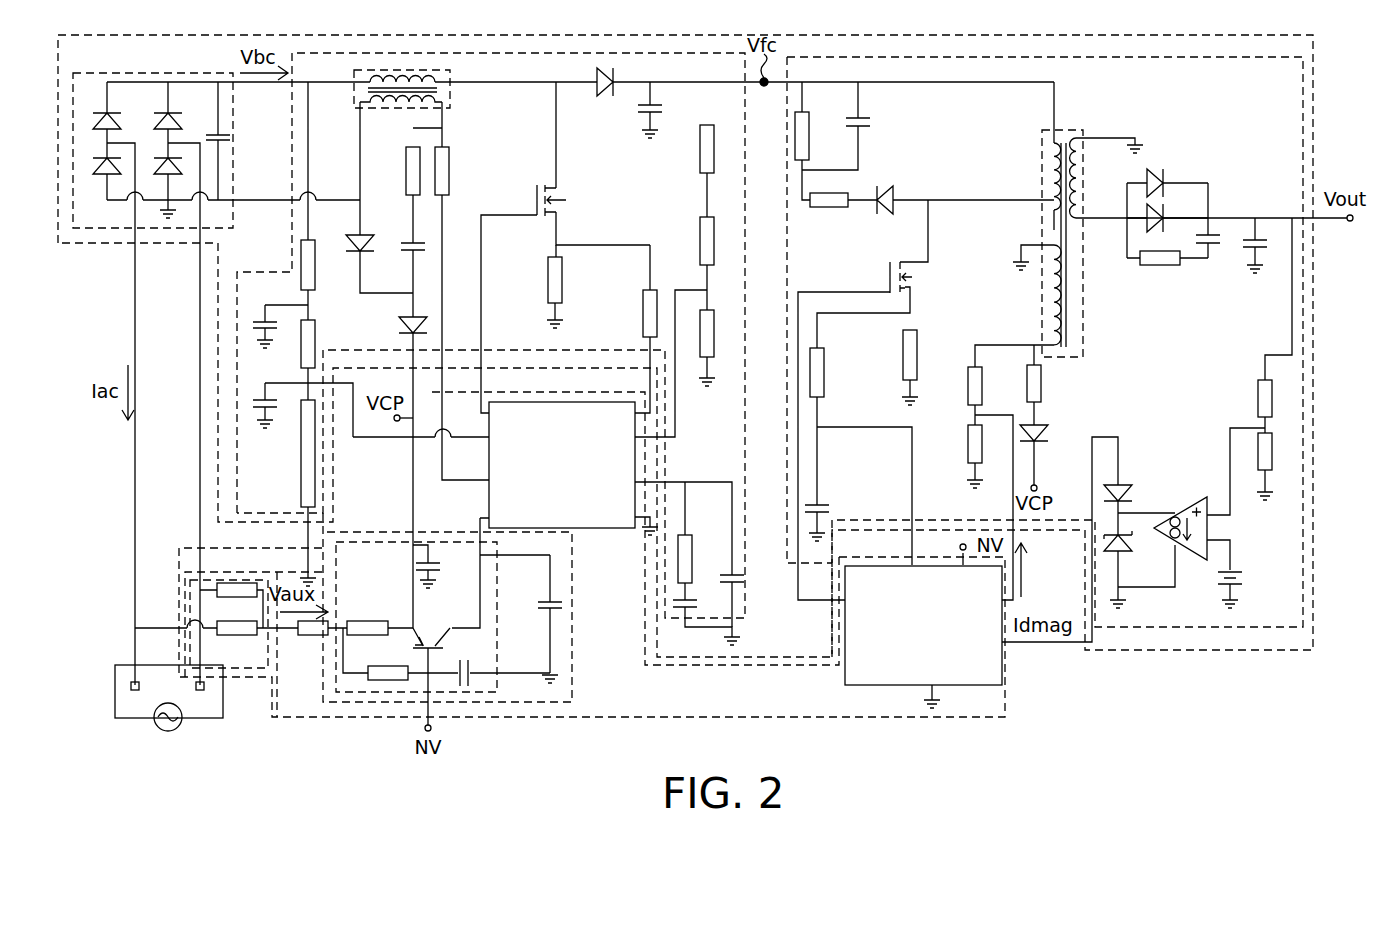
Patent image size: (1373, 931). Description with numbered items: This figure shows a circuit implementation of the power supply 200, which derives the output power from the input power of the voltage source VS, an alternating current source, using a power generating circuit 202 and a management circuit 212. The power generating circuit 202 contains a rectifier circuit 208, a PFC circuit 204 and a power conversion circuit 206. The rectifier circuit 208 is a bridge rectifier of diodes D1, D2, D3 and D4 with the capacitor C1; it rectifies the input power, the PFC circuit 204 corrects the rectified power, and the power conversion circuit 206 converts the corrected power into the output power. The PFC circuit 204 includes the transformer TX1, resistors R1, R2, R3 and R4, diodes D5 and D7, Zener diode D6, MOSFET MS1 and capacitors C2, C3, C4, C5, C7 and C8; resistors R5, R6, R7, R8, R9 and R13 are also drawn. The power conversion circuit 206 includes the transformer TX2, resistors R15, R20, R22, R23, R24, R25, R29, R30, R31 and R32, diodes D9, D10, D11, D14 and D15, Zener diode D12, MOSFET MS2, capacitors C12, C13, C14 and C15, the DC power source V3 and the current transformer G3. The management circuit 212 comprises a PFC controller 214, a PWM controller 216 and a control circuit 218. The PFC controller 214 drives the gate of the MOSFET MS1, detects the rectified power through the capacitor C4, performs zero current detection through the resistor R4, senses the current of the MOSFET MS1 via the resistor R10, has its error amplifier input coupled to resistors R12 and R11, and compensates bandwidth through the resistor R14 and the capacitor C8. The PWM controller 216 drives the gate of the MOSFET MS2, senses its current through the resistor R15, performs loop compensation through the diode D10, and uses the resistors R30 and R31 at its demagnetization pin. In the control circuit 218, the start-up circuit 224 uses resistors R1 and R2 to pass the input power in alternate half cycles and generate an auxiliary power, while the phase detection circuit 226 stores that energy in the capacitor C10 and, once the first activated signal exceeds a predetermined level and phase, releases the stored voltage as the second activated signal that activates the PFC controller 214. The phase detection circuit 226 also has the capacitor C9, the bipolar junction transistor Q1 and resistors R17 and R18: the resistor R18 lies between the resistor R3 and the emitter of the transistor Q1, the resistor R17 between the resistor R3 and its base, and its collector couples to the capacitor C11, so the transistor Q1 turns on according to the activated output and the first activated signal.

The power supply circuit 200 is at (1161, 704).
The power conversion circuit 202 is at (1247, 35).
The power factor correction stage 204 is at (527, 53).
The flyback converter stage 206 is at (1142, 57).
The bridge rectifier 208 is at (138, 73).
The secondary control circuit 212 is at (870, 718).
The first controller 214 is at (580, 528).
The second controller 216 is at (985, 688).
The auxiliary supply circuit 218 is at (507, 702).
The voltage divider 224 is at (222, 580).
The switch circuit 226 is at (355, 692).
The diode D1 is at (97, 110).
The diode D2 is at (97, 157).
The diode D3 is at (158, 110).
The diode D4 is at (158, 157).
The diode D5 is at (399, 319).
The diode D6 is at (372, 232).
The diode D7 is at (599, 93).
The diode D9 is at (1049, 429).
The diode D10 is at (1136, 466).
The diode D11 is at (1175, 172).
The zener diode D12 is at (1132, 555).
The diode D14 is at (906, 194).
The diode D15 is at (1177, 211).
The capacitor C1 is at (208, 123).
The capacitor C2 is at (404, 257).
The capacitor C3 is at (256, 305).
The capacitor C4 is at (256, 386).
The capacitor C5 is at (665, 105).
The capacitor C7 is at (702, 615).
The capacitor C8 is at (721, 588).
The capacitor C9 is at (469, 663).
The capacitor C10 is at (443, 555).
The capacitor C11 is at (533, 591).
The capacitor C12 is at (838, 483).
The capacitor C13 is at (1257, 219).
The capacitor C14 is at (881, 126).
The capacitor C15 is at (1213, 263).
The resistor R1 is at (237, 601).
The resistor R2 is at (237, 641).
The resistor R3 is at (313, 642).
The resistor R4 is at (458, 171).
The resistor R5 is at (396, 171).
The resistor R6 is at (324, 280).
The resistor R7 is at (324, 360).
The resistor R8 is at (290, 453).
The resistor R9 is at (539, 280).
The resistor R10 is at (626, 313).
The resistor R11 is at (705, 359).
The resistor R12 is at (685, 241).
The resistor R13 is at (685, 149).
The resistor R14 is at (685, 541).
The resistor R15 is at (849, 372).
The resistor R17 is at (385, 660).
The resistor R18 is at (367, 615).
The resistor R20 is at (828, 211).
The resistor R22 is at (1054, 383).
The resistor R23 is at (1241, 398).
The resistor R24 is at (1156, 271).
The resistor R25 is at (1269, 479).
The resistor R29 is at (822, 123).
The resistor R30 is at (971, 465).
The resistor R31 is at (991, 386).
The resistor R32 is at (930, 341).
The power switch transistor MS1 is at (521, 200).
The power switch transistor MS2 is at (898, 268).
The transistor Q1 is at (435, 626).
The inductor/transformer TX1 is at (426, 89).
The transformer TX2 is at (1070, 231).
The comparator G3 is at (1180, 518).
The reference voltage source V3 is at (1242, 583).
The AC voltage source VS is at (169, 709).